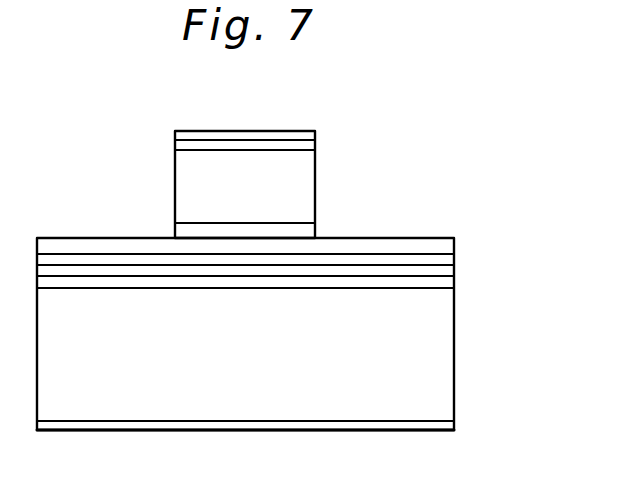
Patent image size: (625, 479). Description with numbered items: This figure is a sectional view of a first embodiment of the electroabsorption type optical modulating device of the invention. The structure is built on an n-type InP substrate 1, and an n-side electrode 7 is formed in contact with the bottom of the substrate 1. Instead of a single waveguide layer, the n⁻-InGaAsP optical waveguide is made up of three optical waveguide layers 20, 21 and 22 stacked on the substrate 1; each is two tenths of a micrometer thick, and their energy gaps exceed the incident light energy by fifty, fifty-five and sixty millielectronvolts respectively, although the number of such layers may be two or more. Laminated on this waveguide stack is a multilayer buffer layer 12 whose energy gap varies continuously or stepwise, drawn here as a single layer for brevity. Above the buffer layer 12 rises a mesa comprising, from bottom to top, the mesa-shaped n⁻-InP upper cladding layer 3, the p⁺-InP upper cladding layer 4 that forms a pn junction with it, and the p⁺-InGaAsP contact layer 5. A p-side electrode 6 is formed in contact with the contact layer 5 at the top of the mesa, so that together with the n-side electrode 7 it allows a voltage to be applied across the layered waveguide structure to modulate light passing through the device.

The n-type InP substrate 1 is at (446, 367).
The n-side electrode 7 is at (454, 425).
The optical waveguide layer 20 is at (454, 280).
The optical waveguide layer 21 is at (454, 268).
The optical waveguide layer 22 is at (454, 257).
The multilayer buffer layer 12 is at (454, 240).
The n⁻-InP upper cladding layer 3 is at (315, 232).
The p⁺-InP upper cladding layer 4 is at (306, 190).
The p⁺-InGaAsP contact layer 5 is at (315, 147).
The p-side electrode 6 is at (315, 136).